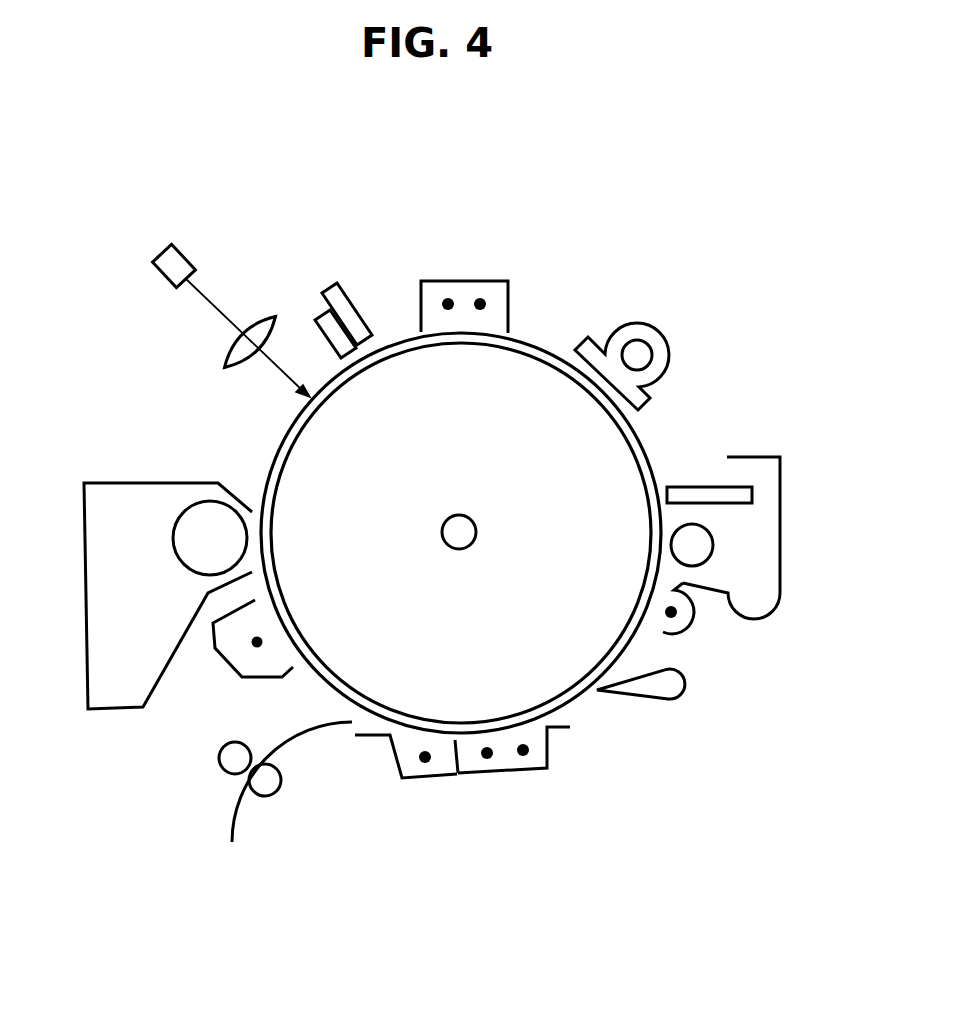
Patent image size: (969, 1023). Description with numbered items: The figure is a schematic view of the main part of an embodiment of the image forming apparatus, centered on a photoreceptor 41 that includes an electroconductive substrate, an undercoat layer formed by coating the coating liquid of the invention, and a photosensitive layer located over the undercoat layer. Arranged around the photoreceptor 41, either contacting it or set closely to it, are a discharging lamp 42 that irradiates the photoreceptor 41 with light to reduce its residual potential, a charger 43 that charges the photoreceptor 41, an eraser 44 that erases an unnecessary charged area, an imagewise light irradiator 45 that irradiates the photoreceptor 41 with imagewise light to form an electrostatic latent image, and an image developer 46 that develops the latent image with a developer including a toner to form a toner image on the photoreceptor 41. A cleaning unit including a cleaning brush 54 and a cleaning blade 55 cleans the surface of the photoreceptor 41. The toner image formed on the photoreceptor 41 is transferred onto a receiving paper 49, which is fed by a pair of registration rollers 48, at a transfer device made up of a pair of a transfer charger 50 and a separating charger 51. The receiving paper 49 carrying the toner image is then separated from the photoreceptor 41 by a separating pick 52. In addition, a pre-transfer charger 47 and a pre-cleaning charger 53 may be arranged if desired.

The photoreceptor 41 is at (317, 457).
The discharging lamp 42 is at (633, 323).
The charger 43 is at (462, 280).
The eraser 44 is at (320, 318).
The imagewise light irradiator 45 is at (160, 277).
The image developer 46 is at (110, 483).
The pre-transfer charger 47 is at (223, 648).
The pair of registration rollers 48 is at (218, 764).
The receiving paper 49 is at (312, 728).
The transfer charger 50 is at (428, 778).
The separating charger 51 is at (522, 772).
The separating pick 52 is at (683, 697).
The pre-cleaning charger 53 is at (693, 628).
The cleaning brush 54 is at (713, 537).
The cleaning blade 55 is at (687, 487).